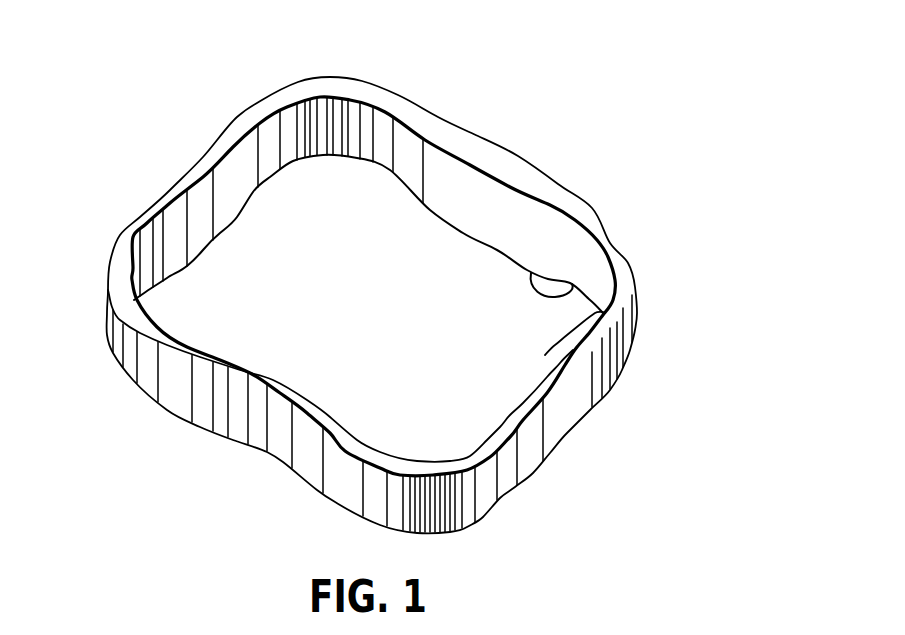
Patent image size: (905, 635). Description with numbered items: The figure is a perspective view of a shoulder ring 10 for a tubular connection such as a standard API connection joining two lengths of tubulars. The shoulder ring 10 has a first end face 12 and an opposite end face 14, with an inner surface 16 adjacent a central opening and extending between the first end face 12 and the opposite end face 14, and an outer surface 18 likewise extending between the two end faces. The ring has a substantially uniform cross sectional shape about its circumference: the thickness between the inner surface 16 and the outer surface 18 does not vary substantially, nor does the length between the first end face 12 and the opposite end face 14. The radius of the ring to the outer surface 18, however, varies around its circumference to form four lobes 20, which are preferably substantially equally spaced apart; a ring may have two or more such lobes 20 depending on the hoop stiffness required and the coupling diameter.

The shoulder ring 10 is at (408, 279).
The first end face 12 is at (365, 92).
The opposite end face 14 is at (562, 292).
The inner surface 16 is at (507, 215).
The outer surface 18 is at (606, 366).
The lobes 20 is at (118, 250).